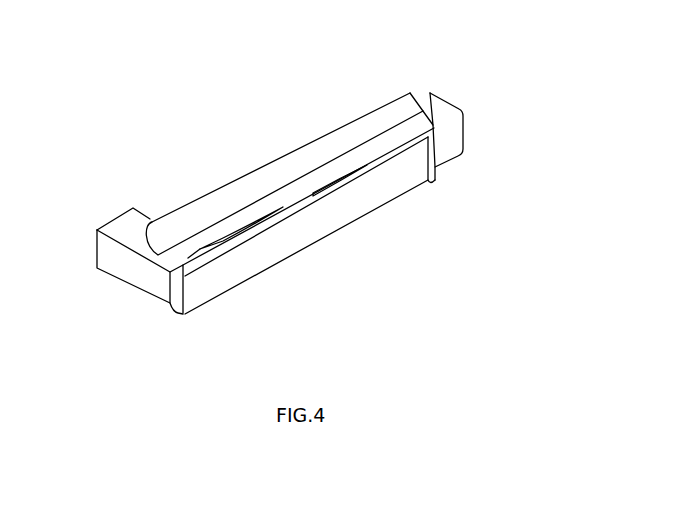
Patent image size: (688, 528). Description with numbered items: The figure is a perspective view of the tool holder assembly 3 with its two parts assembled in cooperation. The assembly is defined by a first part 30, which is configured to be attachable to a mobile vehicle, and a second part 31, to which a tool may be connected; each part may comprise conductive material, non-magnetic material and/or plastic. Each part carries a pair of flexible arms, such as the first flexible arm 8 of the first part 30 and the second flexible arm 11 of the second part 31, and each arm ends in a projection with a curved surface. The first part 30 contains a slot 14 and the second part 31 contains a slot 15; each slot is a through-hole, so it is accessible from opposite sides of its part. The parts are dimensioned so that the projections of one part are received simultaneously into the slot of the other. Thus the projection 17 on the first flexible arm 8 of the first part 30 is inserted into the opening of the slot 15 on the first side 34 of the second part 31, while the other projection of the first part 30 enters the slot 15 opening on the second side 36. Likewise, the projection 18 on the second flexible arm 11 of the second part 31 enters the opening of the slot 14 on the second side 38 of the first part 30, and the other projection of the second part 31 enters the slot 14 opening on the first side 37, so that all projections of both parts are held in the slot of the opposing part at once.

The tool holder assembly 3 is at (447, 102).
The first flexible arm 8 is at (223, 202).
The second flexible arm 11 is at (372, 195).
The slot 14 is at (412, 135).
The slot 15 is at (192, 246).
The projection 17 is at (200, 237).
The projection 18 is at (400, 155).
The first part 30 is at (412, 95).
The second part 31 is at (318, 230).
The first side 34 is at (131, 225).
The second side 36 is at (237, 291).
The first side 37 is at (347, 120).
The second side 38 is at (445, 133).